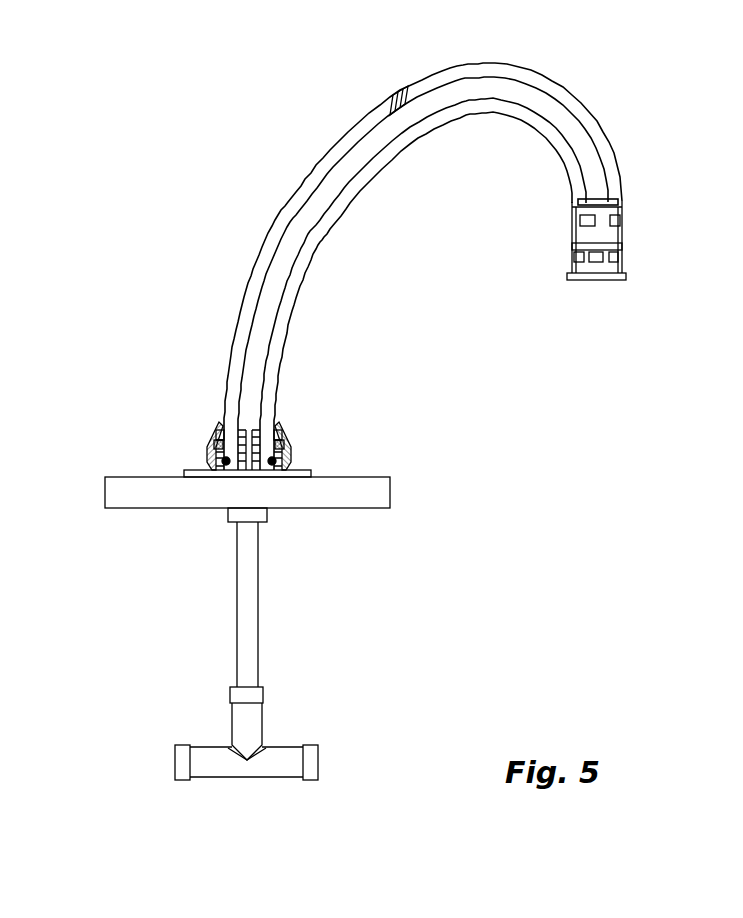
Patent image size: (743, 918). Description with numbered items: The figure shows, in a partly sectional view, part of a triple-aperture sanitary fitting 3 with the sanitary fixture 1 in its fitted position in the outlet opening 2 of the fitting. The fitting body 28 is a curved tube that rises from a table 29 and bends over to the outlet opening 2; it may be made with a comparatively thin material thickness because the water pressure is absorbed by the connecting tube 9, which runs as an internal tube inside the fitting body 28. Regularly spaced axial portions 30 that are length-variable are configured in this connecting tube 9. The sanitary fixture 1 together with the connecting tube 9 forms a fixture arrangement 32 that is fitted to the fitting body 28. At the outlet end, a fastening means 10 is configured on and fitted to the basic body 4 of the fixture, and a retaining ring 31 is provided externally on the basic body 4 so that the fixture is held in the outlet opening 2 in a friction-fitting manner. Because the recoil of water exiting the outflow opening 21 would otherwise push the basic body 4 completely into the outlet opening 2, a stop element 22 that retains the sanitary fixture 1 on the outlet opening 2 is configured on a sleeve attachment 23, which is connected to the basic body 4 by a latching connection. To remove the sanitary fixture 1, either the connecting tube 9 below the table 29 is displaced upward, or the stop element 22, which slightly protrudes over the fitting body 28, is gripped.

The sanitary fixture 1 is at (655, 219).
The outlet opening 2 is at (562, 273).
The sanitary fitting 3 is at (158, 185).
The basic body 4 is at (573, 232).
The connecting tube 9 is at (313, 192).
The fastening means 10 is at (604, 203).
The outflow opening 21 is at (603, 296).
The stop element 22 is at (623, 278).
The sleeve attachment 23 is at (612, 268).
The fitting body 28 is at (252, 277).
The table 29 is at (135, 497).
The axial portions 30 is at (387, 102).
The retaining ring 31 is at (607, 239).
The fixture arrangement 32 is at (525, 205).